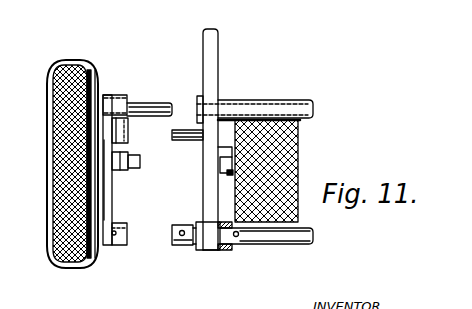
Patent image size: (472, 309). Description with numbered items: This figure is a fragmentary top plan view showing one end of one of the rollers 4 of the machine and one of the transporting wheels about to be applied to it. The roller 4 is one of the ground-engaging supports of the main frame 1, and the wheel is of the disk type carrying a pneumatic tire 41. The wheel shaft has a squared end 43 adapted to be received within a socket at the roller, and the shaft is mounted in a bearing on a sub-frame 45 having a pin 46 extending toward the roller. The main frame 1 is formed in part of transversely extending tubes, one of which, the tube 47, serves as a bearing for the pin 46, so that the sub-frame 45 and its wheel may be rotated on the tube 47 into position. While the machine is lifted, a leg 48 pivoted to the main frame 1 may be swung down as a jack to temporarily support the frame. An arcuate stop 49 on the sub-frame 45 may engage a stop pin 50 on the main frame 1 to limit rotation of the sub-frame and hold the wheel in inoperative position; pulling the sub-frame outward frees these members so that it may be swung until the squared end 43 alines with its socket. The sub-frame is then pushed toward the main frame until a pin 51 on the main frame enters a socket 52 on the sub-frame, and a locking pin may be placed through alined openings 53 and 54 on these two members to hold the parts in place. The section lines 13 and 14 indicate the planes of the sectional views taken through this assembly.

The main frame 1 is at (212, 50).
The roller 4 is at (298, 143).
The section line 13 is at (157, 263).
The section line 14 is at (177, 289).
The pneumatic tire 41 is at (63, 261).
The squared end 43 is at (133, 170).
The sub-frame 45 is at (112, 207).
The pin 46 is at (138, 101).
The transversely extending tube 47 is at (226, 110).
The leg 48 is at (229, 249).
The arcuate stop 49 is at (128, 132).
The stop pin 50 is at (186, 141).
The pin 51 is at (196, 228).
The socket 52 is at (103, 247).
The opening 53 is at (183, 238).
The opening 54 is at (114, 245).